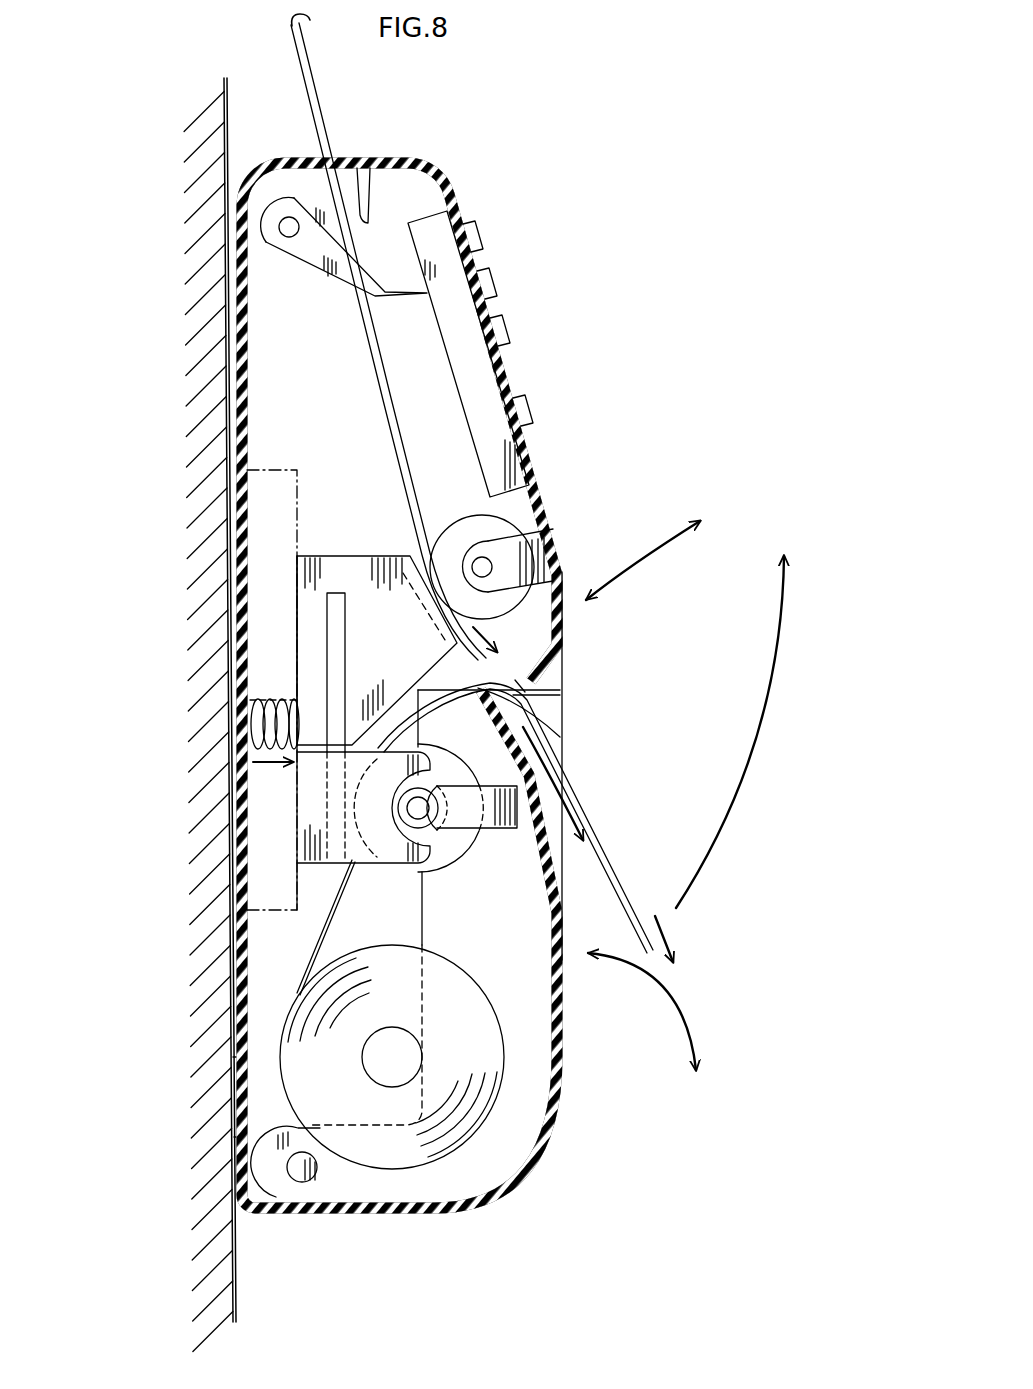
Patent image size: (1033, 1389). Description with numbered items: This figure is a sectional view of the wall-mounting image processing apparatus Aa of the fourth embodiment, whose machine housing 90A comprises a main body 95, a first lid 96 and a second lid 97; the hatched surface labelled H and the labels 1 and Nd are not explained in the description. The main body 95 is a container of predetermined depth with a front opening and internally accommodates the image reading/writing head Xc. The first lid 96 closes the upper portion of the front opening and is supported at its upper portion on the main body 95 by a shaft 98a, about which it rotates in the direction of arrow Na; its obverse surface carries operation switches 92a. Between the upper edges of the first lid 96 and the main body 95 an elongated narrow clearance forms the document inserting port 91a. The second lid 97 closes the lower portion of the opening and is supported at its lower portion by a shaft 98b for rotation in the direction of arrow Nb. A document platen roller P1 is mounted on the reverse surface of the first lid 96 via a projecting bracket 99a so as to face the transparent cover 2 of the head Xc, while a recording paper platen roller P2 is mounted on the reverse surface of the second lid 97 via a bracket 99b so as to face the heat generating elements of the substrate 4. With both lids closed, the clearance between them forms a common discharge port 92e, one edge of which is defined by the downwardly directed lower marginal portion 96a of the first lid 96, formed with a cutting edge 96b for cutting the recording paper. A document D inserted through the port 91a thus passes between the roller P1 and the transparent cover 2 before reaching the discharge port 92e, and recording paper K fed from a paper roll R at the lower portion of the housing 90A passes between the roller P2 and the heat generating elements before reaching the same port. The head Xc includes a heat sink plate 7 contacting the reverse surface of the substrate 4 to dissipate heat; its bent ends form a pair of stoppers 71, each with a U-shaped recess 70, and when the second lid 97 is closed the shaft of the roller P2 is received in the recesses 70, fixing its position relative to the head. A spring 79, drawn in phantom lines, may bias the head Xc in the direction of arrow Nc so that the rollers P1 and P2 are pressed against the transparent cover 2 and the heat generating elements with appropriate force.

The wall H is at (228, 128).
The machine housing 90A is at (458, 178).
The first lid 96 is at (493, 307).
The second lid 97 is at (565, 1020).
The main body 95 is at (247, 380).
The wall-mounting image processing apparatus Aa is at (577, 217).
The shaft 98a is at (285, 222).
The document inserting port 91a is at (343, 160).
The document D is at (387, 413).
The operation switches 92a is at (487, 275).
The image reading/writing head Xc is at (358, 552).
The cutter unit 1 is at (373, 600).
The heat sink plate 7 is at (310, 630).
The substrate 4 is at (337, 670).
The transparent cover 2 is at (443, 583).
The document platen roller P1 is at (495, 523).
The projecting bracket 99a is at (517, 550).
The arrow Na is at (643, 560).
The lower marginal portion 96a is at (545, 673).
The cutting edge 96b is at (560, 700).
The common discharge port 92e is at (543, 702).
The cover opening direction Nd is at (744, 732).
The arrow Nb is at (658, 1011).
The spring 79 is at (270, 700).
The arrow Nc is at (253, 762).
The stoppers 71 is at (317, 790).
The U-shaped recess 70 is at (390, 827).
The recording paper K is at (343, 897).
The recording paper platen roller P2 is at (447, 852).
The bracket 99b is at (492, 828).
The paper roll R is at (497, 997).
The shaft 98b is at (320, 1177).